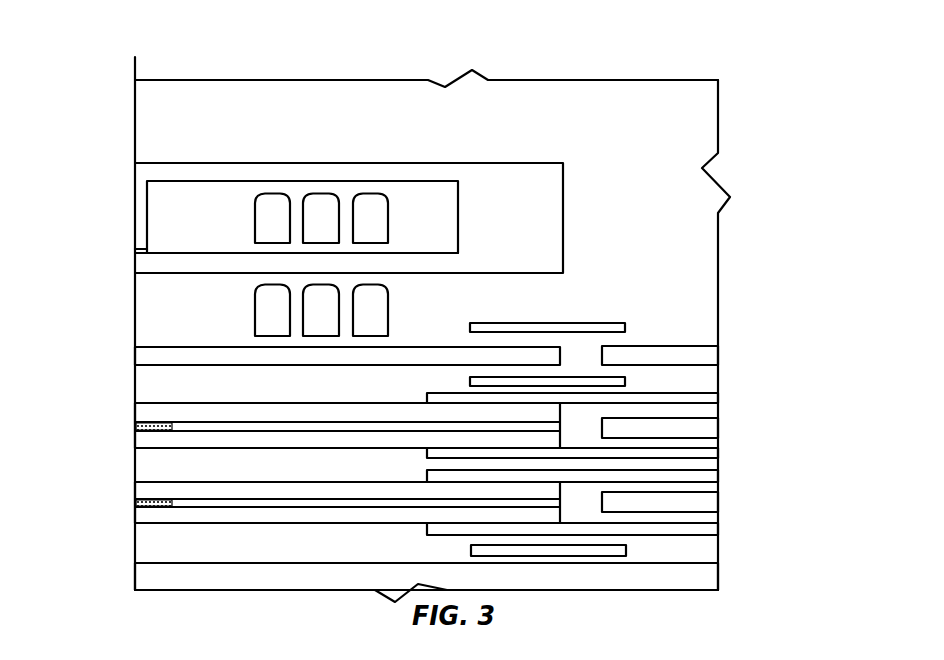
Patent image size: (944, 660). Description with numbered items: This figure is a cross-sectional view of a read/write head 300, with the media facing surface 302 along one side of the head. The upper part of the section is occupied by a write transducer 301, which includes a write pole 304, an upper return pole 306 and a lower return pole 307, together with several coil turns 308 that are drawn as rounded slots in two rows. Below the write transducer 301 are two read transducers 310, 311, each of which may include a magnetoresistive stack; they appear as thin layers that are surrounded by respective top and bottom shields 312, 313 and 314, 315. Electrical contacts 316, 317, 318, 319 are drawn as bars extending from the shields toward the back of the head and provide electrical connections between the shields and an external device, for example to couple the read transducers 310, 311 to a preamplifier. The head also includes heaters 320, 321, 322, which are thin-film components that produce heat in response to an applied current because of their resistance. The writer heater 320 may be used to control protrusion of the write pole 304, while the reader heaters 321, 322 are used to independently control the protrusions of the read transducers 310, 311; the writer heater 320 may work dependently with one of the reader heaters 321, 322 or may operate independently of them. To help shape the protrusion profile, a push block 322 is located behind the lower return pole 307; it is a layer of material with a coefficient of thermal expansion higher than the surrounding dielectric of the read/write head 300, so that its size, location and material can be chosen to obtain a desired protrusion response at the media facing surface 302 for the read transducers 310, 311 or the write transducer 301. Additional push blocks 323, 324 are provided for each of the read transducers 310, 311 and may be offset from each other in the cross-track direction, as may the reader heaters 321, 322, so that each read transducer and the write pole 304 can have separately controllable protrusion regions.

The read/write head 300 is at (752, 90).
The write transducer 301 is at (708, 582).
The media facing surface 302 is at (134, 68).
The write pole 304 is at (140, 263).
The upper return pole 306 is at (140, 208).
The lower return pole 307 is at (142, 353).
The coil turns 308 is at (312, 201).
The read transducer 310 is at (140, 426).
The read transducer 311 is at (141, 502).
The top shield 312 is at (145, 413).
The bottom shield 313 is at (140, 440).
The top shield 314 is at (143, 492).
The bottom shield 315 is at (141, 516).
The electrical contact 316 is at (712, 400).
The electrical contact 317 is at (712, 456).
The electrical contact 318 is at (712, 477).
The electrical contact 319 is at (712, 530).
The writer heater 320 is at (618, 327).
The reader heater 321 is at (618, 382).
The reader heater / push block 322 is at (708, 353).
The push block 323 is at (708, 426).
The push block 324 is at (712, 504).